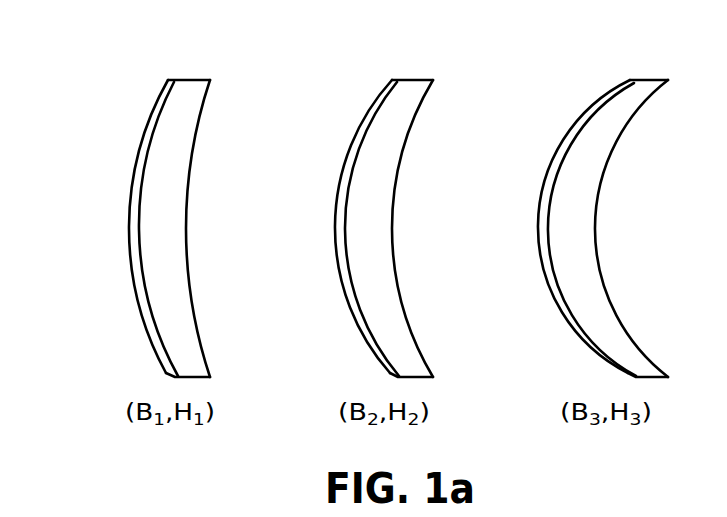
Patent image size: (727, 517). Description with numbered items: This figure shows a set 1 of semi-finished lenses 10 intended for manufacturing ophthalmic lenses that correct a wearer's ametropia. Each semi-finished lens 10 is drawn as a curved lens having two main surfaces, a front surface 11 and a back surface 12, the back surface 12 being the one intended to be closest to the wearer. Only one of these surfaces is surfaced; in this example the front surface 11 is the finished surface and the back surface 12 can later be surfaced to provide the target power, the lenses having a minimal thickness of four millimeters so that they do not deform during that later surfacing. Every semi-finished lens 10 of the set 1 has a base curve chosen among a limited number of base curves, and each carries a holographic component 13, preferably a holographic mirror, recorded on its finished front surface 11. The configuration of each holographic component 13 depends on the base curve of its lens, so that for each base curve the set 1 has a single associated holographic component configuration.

The set of semi-finished lenses 1 is at (360, 225).
The semi-finished lens 10 is at (382, 200).
The front surface 11 is at (377, 107).
The back surface 12 is at (408, 115).
The holographic component 13 is at (348, 292).